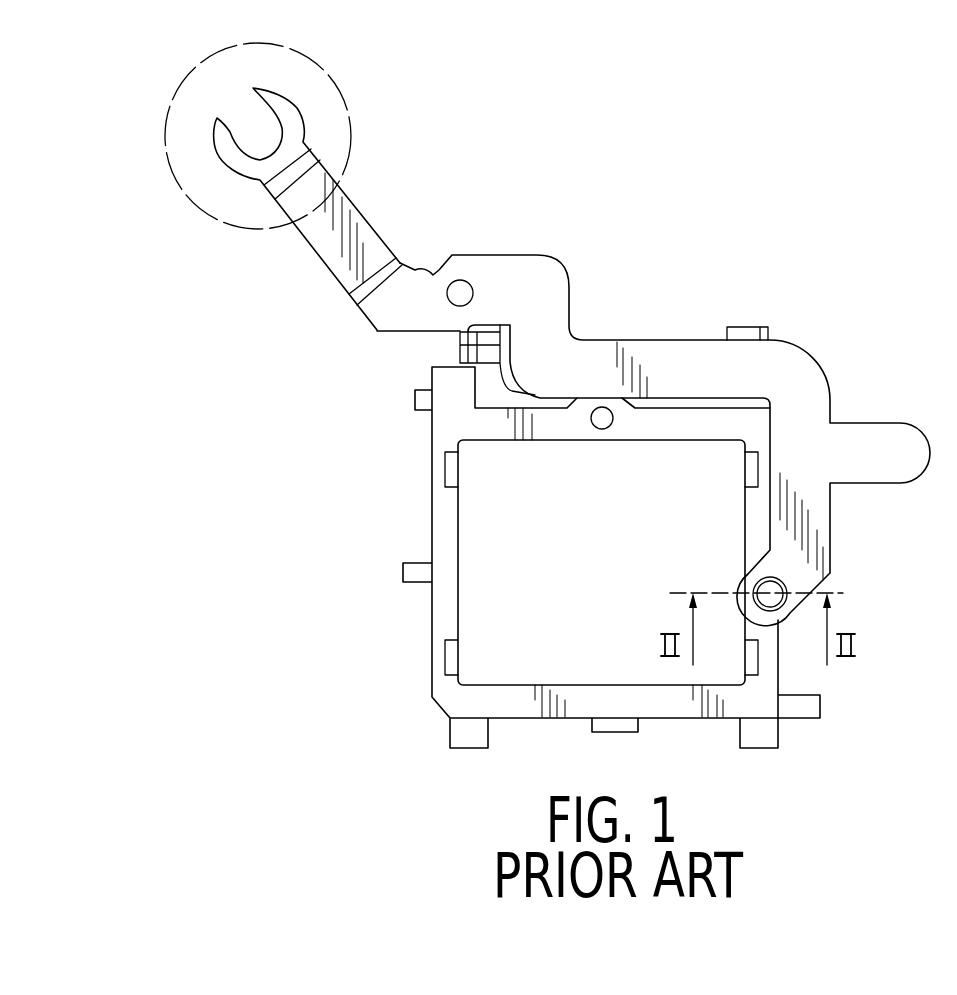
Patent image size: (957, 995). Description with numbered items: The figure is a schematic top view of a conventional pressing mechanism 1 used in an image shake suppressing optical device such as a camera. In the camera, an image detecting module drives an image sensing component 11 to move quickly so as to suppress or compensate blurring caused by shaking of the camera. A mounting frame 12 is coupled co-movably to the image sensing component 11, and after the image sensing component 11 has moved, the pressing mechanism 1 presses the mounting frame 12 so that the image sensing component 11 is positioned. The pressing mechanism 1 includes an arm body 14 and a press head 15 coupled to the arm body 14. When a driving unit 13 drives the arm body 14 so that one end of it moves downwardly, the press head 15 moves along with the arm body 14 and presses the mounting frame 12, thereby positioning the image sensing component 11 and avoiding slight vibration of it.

The pressing mechanism 1 is at (436, 152).
The image sensing component 11 is at (475, 515).
The mounting frame 12 is at (430, 624).
The driving unit 13 is at (187, 162).
The arm body 14 is at (812, 360).
The press head 15 is at (777, 578).